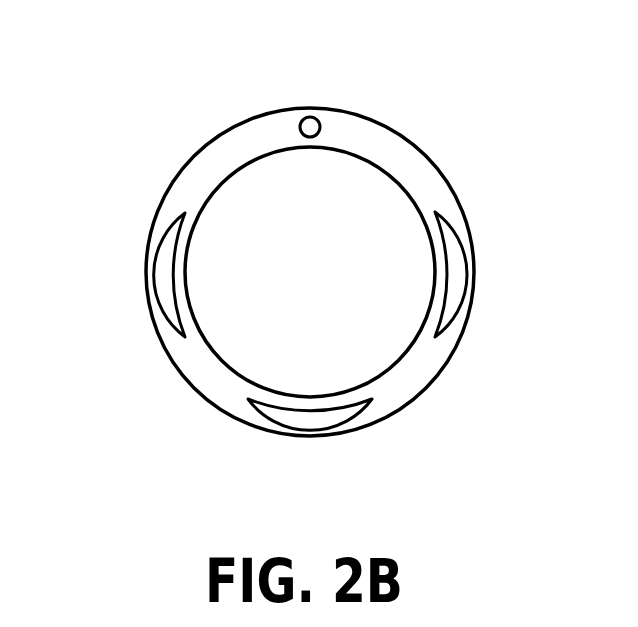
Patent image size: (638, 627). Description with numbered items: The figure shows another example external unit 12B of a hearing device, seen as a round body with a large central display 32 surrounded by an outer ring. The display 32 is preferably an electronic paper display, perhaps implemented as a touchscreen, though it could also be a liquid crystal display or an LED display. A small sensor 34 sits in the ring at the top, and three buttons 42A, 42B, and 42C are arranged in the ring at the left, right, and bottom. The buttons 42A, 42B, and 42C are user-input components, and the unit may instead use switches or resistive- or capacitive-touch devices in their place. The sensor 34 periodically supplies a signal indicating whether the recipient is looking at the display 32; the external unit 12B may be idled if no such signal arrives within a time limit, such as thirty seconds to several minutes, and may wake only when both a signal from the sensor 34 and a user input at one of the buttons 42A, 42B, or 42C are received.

The external unit 12B is at (99, 103).
The display 32 is at (323, 287).
The sensor 34 is at (310, 116).
The button 42A is at (150, 258).
The button 42B is at (474, 261).
The button 42C is at (305, 434).